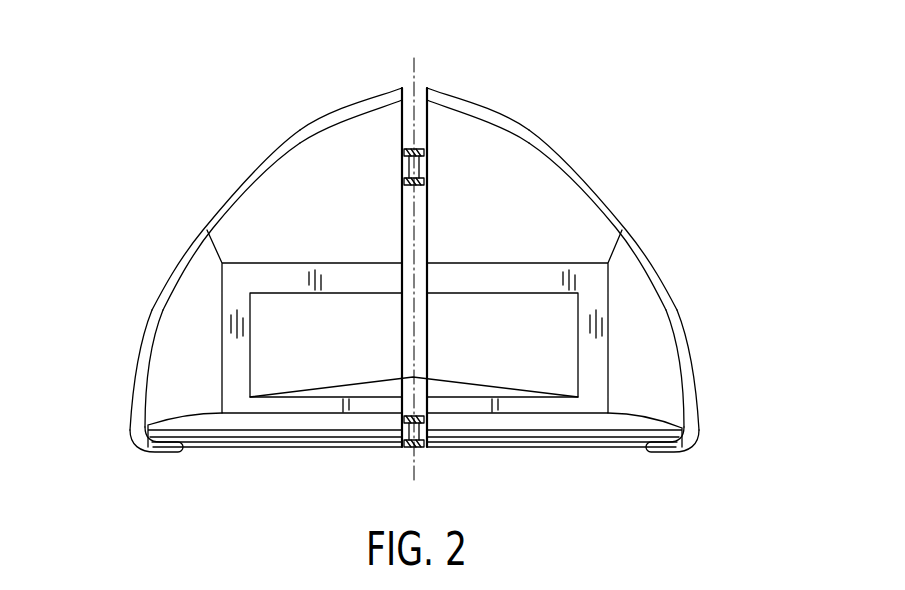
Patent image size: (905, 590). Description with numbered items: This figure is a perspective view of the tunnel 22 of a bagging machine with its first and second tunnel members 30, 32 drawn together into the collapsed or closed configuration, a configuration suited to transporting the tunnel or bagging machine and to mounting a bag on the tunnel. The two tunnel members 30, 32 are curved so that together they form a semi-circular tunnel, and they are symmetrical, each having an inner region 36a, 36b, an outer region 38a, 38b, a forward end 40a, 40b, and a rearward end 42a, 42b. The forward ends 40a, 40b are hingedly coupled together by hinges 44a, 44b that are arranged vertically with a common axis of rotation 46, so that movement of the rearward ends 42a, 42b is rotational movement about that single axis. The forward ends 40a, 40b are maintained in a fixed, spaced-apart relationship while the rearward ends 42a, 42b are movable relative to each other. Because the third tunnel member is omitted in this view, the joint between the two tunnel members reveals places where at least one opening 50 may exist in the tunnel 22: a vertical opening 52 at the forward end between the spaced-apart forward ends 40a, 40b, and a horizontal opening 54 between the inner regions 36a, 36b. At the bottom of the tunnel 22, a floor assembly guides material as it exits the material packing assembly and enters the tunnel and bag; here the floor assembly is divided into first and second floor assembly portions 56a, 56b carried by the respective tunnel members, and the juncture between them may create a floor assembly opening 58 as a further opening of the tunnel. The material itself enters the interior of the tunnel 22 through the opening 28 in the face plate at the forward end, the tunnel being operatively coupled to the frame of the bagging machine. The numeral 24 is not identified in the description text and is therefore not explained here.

The tunnel 22 is at (668, 177).
The shell 24 is at (682, 132).
The opening 28 is at (567, 337).
The first tunnel member 30 is at (243, 147).
The second tunnel member 32 is at (672, 262).
The inner region 36a is at (392, 80).
The inner region 36b is at (442, 82).
The outer region 38a is at (170, 457).
The outer region 38b is at (657, 460).
The forward end 40a is at (284, 252).
The forward end 40b is at (574, 252).
The rearward end 42a is at (145, 340).
The rearward end 42b is at (682, 337).
The hinge 44a is at (412, 449).
The hinge 44b is at (420, 169).
The axis of rotation 46 is at (421, 80).
The opening 50 is at (400, 238).
The vertical opening 52 is at (425, 215).
The horizontal opening 54 is at (403, 107).
The first floor assembly portion 56a is at (300, 423).
The second floor assembly portion 56b is at (550, 420).
The floor assembly opening 58 is at (407, 389).